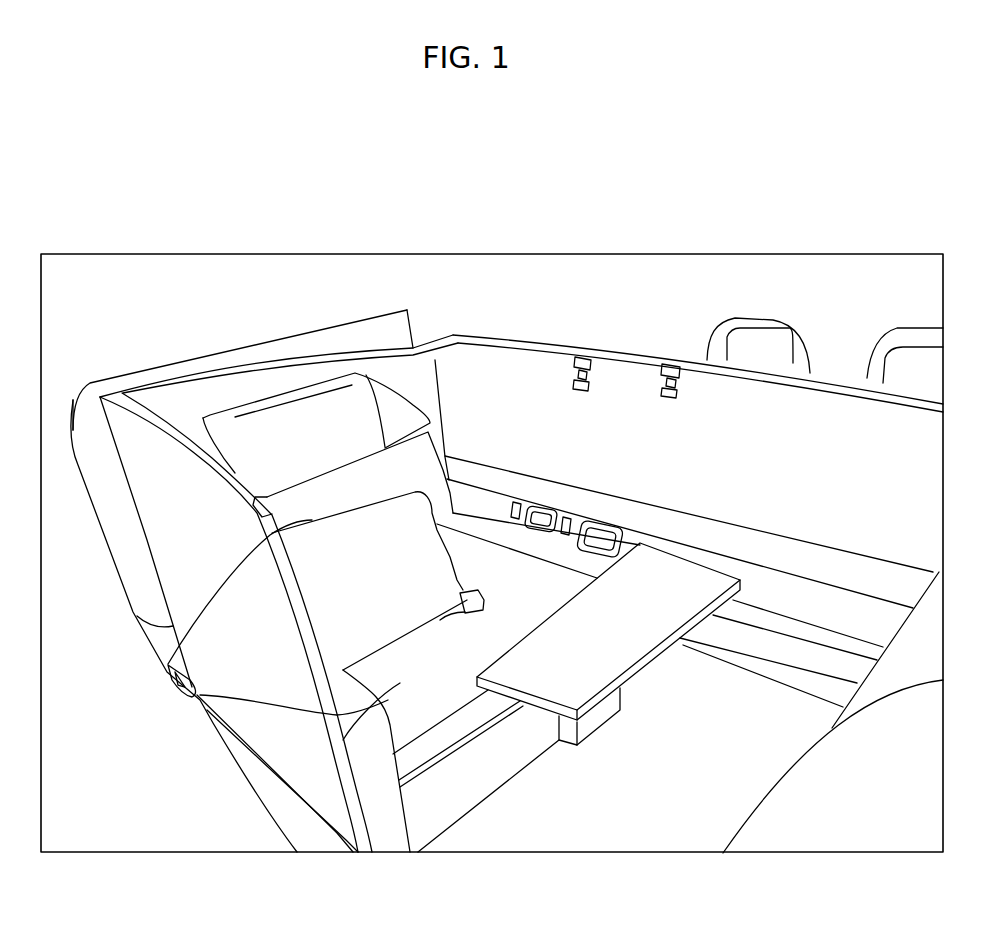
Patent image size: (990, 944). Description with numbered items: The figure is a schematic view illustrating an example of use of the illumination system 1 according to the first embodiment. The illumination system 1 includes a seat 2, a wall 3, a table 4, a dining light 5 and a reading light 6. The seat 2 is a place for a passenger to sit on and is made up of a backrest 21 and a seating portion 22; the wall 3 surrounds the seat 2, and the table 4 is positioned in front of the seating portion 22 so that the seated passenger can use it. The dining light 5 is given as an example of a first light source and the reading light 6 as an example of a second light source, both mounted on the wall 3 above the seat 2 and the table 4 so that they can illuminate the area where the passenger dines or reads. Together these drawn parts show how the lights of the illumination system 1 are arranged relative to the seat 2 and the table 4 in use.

The illumination system 1 is at (644, 332).
The seat 2 is at (84, 675).
The backrest 21 is at (168, 664).
The seating portion 22 is at (200, 695).
The wall 3 is at (324, 345).
The table 4 is at (599, 646).
The dining light 5 is at (677, 373).
The reading light 6 is at (588, 358).